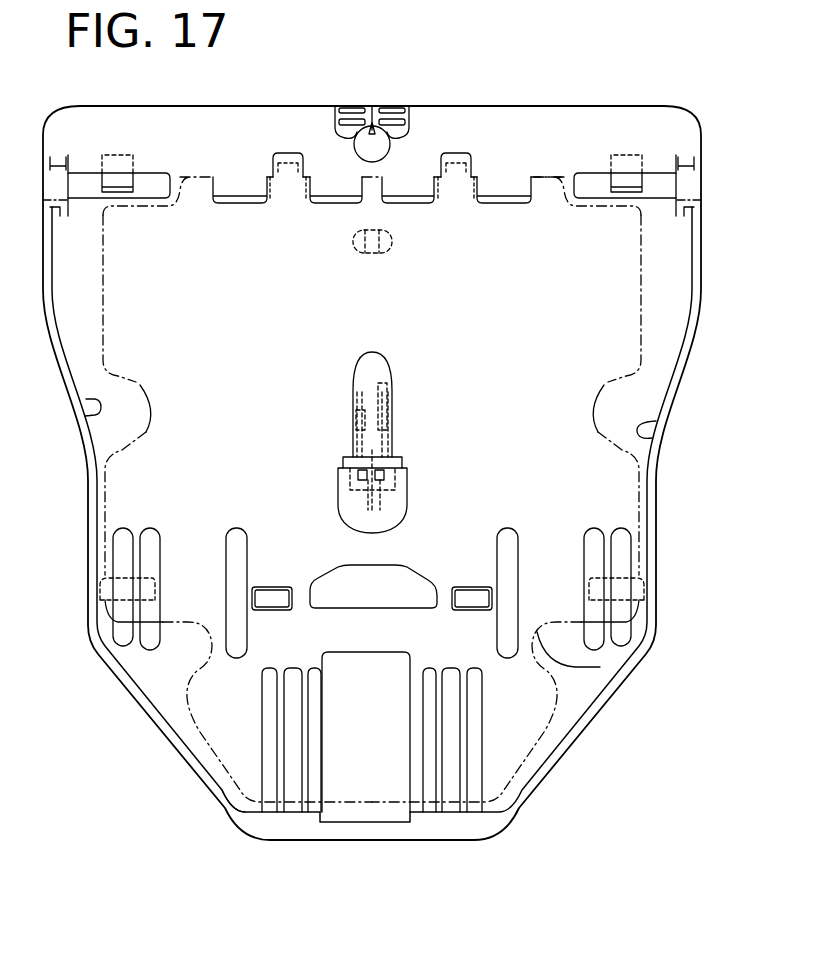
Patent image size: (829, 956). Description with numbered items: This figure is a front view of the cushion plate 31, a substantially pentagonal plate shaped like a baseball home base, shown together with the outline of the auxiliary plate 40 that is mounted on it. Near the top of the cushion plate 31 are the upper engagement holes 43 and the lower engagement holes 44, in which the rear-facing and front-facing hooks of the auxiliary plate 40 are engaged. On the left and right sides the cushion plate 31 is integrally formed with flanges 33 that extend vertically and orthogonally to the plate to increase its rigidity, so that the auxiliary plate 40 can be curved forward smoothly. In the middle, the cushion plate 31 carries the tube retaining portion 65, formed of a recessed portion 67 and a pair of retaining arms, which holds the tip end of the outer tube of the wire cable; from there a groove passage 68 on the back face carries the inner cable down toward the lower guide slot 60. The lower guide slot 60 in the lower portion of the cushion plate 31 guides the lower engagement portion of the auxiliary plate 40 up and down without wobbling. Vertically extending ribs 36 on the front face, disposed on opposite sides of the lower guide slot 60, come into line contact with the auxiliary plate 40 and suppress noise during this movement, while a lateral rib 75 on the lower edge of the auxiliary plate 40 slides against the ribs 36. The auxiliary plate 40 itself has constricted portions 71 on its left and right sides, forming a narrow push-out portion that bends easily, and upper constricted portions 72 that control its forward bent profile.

The cushion plate 31 is at (504, 92).
The flanges 33 is at (99, 408).
The ribs 36 is at (318, 739).
The auxiliary plate 40 is at (650, 299).
The upper engagement holes 43 is at (287, 153).
The lower engagement holes 44 is at (245, 190).
The lower guide slot 60 is at (350, 777).
The tube retaining portion 65 is at (401, 430).
The recessed portion 67 is at (376, 373).
The groove passage 68 is at (358, 418).
The constricted portions 71 is at (210, 640).
The upper constricted portions 72 is at (147, 399).
The lateral rib 75 is at (240, 810).